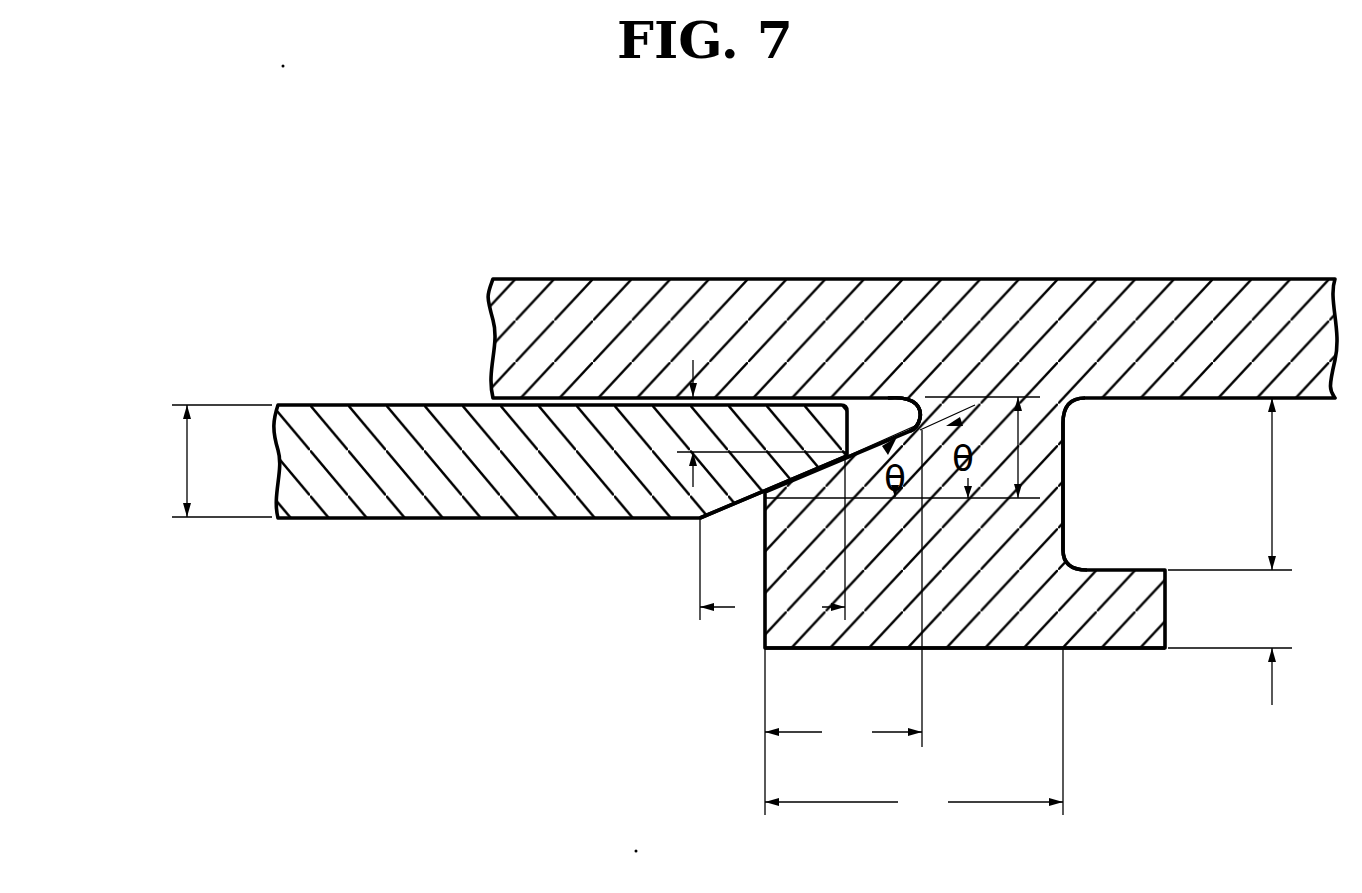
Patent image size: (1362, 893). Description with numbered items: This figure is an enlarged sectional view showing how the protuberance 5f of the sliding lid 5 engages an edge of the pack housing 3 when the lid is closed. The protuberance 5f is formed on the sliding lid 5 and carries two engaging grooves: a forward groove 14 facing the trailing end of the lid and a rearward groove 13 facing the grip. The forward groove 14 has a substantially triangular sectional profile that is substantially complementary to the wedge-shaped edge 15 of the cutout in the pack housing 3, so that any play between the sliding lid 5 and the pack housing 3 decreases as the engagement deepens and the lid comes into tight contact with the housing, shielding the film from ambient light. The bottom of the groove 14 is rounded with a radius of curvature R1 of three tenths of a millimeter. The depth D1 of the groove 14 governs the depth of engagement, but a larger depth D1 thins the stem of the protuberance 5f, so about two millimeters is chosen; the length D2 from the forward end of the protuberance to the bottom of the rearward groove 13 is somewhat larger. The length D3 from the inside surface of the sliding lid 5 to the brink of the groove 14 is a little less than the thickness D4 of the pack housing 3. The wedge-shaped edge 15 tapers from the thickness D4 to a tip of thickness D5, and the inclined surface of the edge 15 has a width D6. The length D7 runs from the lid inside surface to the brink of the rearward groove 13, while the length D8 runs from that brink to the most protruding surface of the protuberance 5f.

The pack housing 3 is at (413, 556).
The sliding lid 5 is at (641, 240).
The protuberance 5f is at (1127, 683).
The engaging groove 13 is at (1068, 478).
The engaging groove 14 is at (900, 397).
The wedge-shaped edge 15 is at (751, 500).
The radius of curvature R1 is at (931, 389).
The depth of the groove D1 is at (843, 622).
The length from forward end of the protuberance to bottom of the rearward groove D2 is at (914, 736).
The length from inside surface of the sliding lid to brink of the groove D3 is at (902, 447).
The thickness of the pack housing D4 is at (219, 461).
The thickness of the tip D5 is at (758, 423).
The width of the tapered surface D6 is at (772, 543).
The length from inside surface of the sliding lid to brink of the rearward groove D7 is at (1231, 484).
The length from brink of the rearward groove to most protruding surface D8 is at (1231, 648).